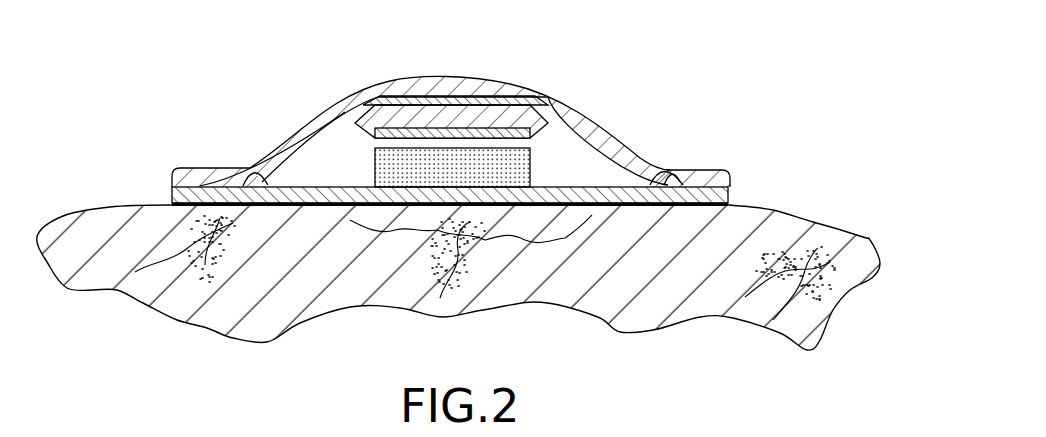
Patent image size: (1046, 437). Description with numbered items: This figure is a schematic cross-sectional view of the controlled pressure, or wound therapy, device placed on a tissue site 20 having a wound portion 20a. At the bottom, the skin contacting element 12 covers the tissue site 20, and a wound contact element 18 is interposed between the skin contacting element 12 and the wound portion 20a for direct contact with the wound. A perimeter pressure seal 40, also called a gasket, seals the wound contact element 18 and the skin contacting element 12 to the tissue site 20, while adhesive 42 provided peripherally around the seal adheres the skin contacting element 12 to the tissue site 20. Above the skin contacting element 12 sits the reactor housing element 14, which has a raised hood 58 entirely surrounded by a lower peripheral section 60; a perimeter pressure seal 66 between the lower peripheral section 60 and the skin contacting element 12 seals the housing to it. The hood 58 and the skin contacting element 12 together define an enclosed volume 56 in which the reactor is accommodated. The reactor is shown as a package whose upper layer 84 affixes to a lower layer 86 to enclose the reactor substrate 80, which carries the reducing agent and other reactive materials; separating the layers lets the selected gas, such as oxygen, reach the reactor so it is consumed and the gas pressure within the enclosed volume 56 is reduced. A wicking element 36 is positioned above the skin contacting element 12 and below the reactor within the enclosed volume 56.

The skin contacting element 12 is at (680, 190).
The reactor housing element 14 is at (465, 94).
The wound contact element 18 is at (513, 200).
The tissue site 20 is at (238, 272).
The wound portion 20a is at (437, 217).
The wicking element 36 is at (408, 167).
The perimeter pressure seal 40 is at (600, 198).
The adhesive 42 is at (275, 205).
The enclosed volume 56 is at (557, 158).
The hood 58 is at (565, 103).
The lower peripheral section 60 is at (710, 175).
The perimeter pressure seal 66 is at (236, 177).
The reactor substrate 80 is at (395, 117).
The upper layer 84 is at (423, 102).
The lower layer 86 is at (370, 133).